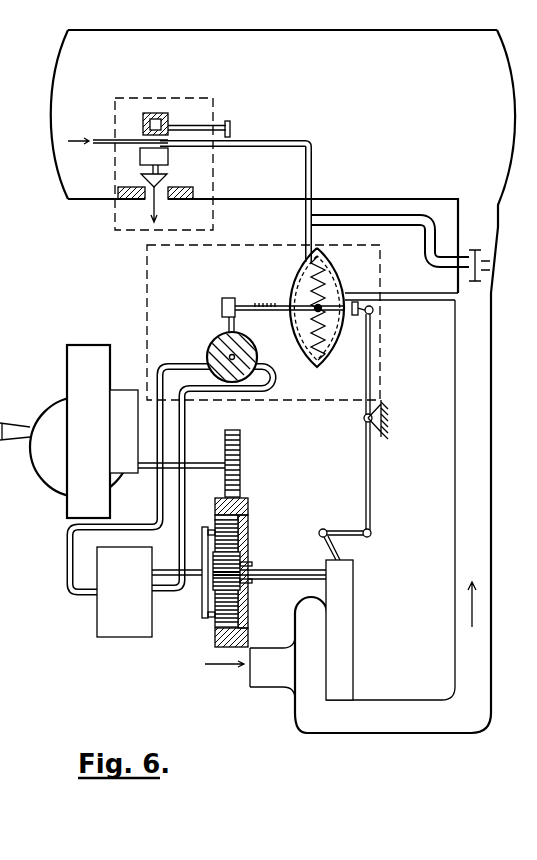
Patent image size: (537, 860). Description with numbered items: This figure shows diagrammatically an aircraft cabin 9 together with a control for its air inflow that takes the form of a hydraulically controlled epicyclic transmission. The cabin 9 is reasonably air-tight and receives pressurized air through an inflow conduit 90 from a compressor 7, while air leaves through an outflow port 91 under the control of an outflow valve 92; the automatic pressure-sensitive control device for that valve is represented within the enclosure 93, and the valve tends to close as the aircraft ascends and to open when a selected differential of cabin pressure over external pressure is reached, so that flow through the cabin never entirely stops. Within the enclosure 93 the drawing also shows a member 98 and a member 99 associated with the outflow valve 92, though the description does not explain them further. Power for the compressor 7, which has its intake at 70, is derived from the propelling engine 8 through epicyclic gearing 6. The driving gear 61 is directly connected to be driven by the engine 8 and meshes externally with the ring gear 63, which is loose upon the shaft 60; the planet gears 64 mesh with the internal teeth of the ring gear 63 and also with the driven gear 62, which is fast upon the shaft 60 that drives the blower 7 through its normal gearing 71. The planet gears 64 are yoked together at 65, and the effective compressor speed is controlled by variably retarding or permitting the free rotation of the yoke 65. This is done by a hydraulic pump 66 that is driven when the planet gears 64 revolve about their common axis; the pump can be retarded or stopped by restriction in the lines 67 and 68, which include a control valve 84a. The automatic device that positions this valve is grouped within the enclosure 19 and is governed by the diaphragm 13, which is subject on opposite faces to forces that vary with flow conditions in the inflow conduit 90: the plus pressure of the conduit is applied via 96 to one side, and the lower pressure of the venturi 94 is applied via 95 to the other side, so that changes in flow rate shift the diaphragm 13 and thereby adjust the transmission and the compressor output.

The epicyclic gearing 6 is at (248, 513).
The compressor 7 is at (306, 682).
The propelling engine 8 is at (60, 402).
The cabin 9 is at (418, 33).
The diaphragm 13 is at (330, 272).
The enclosure 19 is at (320, 400).
The shaft 60 is at (278, 574).
The driving gear 61 is at (242, 445).
The driven gear 62 is at (215, 588).
The ring gear 63 is at (220, 508).
The planet gears 64 is at (227, 538).
The yoke 65 is at (152, 584).
The hydraulic pump 66 is at (110, 617).
The line 67 is at (155, 367).
The line 68 is at (182, 435).
The compressor intake 70 is at (263, 676).
The normal gearing 71 is at (340, 610).
The control valve 84a is at (220, 348).
The inflow conduit 90 is at (480, 444).
The outflow port 91 is at (150, 197).
The outflow valve 92 is at (150, 180).
The enclosure 93 is at (163, 99).
The venturi 94 is at (482, 267).
The minus pressure line 95 is at (385, 220).
The plus pressure line 96 is at (422, 293).
The rod 98 is at (170, 125).
The needle 99 is at (158, 143).